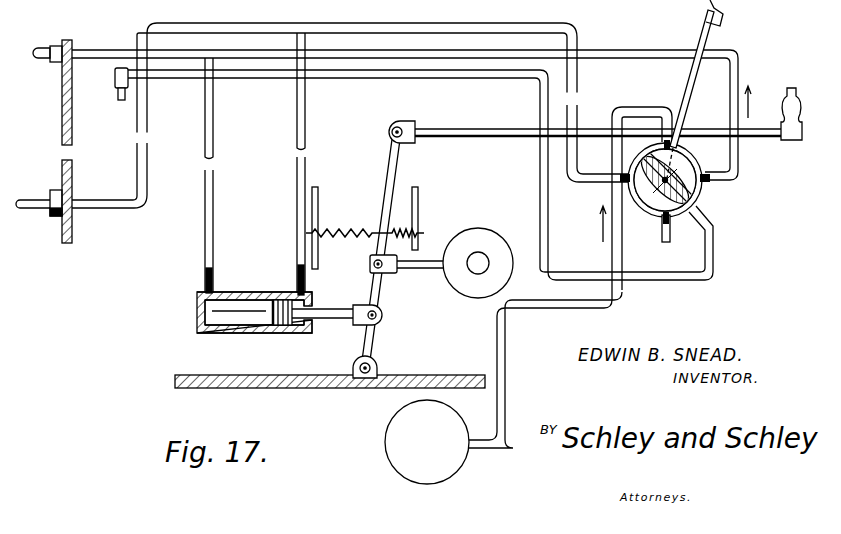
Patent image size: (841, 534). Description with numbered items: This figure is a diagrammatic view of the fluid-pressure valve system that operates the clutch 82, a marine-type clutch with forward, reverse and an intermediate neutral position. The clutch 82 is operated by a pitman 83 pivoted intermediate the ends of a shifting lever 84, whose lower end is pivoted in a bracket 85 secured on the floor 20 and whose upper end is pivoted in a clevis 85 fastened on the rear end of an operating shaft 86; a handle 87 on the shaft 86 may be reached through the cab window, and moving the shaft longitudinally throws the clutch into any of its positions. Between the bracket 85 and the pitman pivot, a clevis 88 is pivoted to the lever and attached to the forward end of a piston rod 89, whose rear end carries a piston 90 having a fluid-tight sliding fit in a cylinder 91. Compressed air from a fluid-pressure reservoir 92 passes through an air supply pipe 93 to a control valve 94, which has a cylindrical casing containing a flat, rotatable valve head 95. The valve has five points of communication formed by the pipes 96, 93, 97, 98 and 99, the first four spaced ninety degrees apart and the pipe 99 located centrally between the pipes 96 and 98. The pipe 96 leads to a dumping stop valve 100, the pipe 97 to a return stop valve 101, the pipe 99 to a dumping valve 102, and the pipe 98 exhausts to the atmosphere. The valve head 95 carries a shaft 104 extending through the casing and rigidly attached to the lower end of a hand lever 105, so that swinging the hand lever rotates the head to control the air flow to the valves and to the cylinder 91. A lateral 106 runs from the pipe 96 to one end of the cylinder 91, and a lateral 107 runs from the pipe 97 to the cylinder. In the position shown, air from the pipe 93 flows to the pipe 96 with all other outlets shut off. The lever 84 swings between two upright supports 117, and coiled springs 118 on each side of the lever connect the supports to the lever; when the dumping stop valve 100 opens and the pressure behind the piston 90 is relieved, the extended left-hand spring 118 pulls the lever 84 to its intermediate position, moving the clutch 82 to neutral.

The floor 20 is at (302, 376).
The clutch 82 is at (495, 244).
The pitman 83 is at (420, 268).
The shifting lever 84 is at (378, 199).
The bracket 85 is at (410, 118).
The operating shaft 86 is at (499, 138).
The handle 87 is at (786, 92).
The clevis 88 is at (356, 306).
The piston rod 89 is at (345, 320).
The piston 90 is at (288, 280).
The cylinder 91 is at (224, 292).
The fluid-pressure reservoir 92 is at (396, 428).
The air supply pipe 93 is at (643, 107).
The control valve 94 is at (698, 148).
The valve head 95 is at (705, 196).
The pipe 96 is at (100, 50).
The pipe 97 is at (118, 208).
The pipe 98 is at (676, 236).
The pipe 99 is at (186, 80).
The dumping stop valve 100 is at (61, 42).
The return stop valve 101 is at (56, 195).
The dumping valve 102 is at (115, 78).
The shaft 104 is at (658, 186).
The hand lever 105 is at (714, 30).
The lateral 106 is at (213, 186).
The lateral 107 is at (305, 106).
The upright supports 117 is at (319, 186).
The coiled springs 118 is at (350, 232).